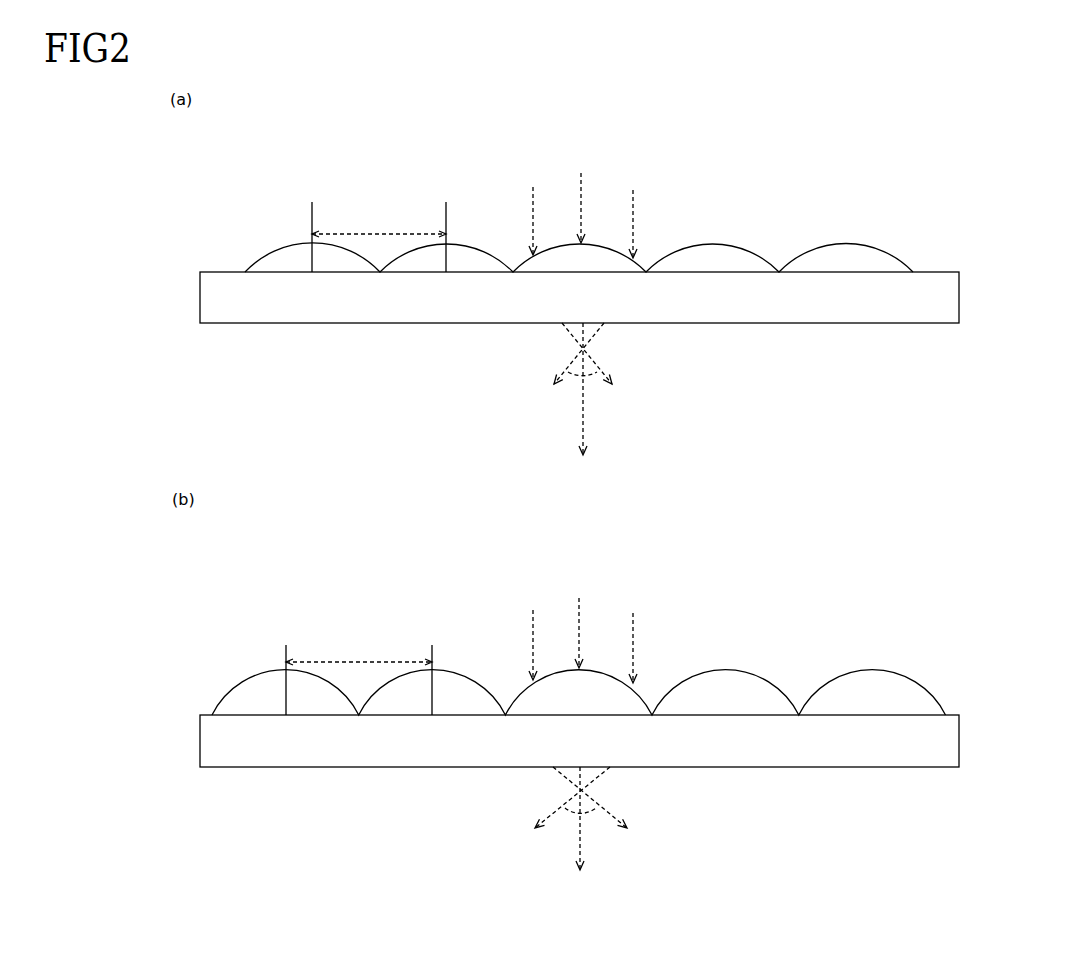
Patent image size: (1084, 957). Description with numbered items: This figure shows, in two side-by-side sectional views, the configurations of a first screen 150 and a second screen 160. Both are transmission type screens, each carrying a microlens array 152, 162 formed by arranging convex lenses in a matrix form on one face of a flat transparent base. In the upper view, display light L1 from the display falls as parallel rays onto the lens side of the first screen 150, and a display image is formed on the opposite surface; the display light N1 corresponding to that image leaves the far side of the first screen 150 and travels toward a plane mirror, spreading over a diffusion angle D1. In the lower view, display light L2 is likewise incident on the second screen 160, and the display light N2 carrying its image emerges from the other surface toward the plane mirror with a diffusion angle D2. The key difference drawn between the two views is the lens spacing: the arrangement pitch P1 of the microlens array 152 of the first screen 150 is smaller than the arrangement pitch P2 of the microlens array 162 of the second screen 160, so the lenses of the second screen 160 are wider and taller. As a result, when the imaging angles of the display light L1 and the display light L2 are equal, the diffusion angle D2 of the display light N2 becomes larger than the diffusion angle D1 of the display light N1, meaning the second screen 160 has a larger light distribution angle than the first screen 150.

The first screen 150 is at (262, 167).
The microlens array 152 is at (470, 246).
The second screen 160 is at (273, 556).
The microlens array 162 is at (467, 673).
The arrangement pitch P1 is at (379, 237).
The arrangement pitch P2 is at (359, 674).
The display light L1 is at (582, 183).
The display light L2 is at (580, 608).
The display light N1 is at (597, 363).
The display light N2 is at (598, 810).
The diffusion angle D1 is at (578, 375).
The diffusion angle D2 is at (575, 812).